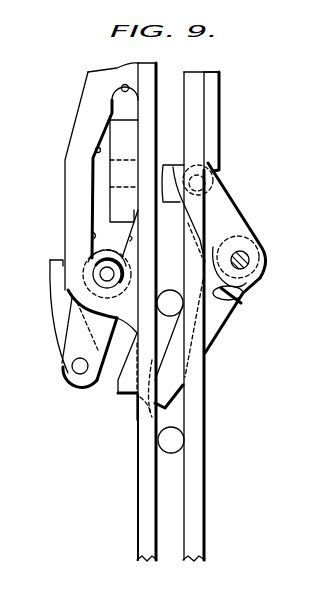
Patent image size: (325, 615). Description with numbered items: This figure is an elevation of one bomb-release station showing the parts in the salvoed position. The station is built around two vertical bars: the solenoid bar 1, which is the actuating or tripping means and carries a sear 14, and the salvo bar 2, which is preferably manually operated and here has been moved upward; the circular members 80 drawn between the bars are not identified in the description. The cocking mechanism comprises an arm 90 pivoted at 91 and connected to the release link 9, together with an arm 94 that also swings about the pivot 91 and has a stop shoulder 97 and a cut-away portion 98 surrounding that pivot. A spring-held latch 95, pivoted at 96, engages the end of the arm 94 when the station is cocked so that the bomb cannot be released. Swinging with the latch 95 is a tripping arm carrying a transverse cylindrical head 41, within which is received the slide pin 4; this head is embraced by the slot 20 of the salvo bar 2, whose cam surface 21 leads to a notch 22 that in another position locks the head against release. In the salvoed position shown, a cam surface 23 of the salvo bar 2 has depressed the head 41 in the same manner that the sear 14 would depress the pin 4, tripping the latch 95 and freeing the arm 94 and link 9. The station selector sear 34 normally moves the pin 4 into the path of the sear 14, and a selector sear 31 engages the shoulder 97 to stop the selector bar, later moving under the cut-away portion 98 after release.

The solenoid bar 1 is at (146, 476).
The salvo bar 2 is at (73, 222).
The slide pin 4 is at (104, 275).
The release link 9 is at (173, 167).
The sear 14 is at (128, 393).
The aperture (slot) 20 is at (93, 236).
The cam surface 21 is at (96, 150).
The notch 22 is at (125, 85).
The cam surface 23 is at (131, 239).
The sear 31 is at (215, 122).
The station selector sear 34 is at (134, 203).
The transverse cylindrical head 41 is at (92, 254).
The roller 80 is at (173, 305).
The arm 90 is at (240, 213).
The pivot 91 is at (248, 253).
The arm 94 is at (219, 317).
The latch 95 is at (57, 310).
The pivot 96 is at (72, 366).
The stop shoulder 97 is at (243, 302).
The cut-away portion 98 is at (216, 262).